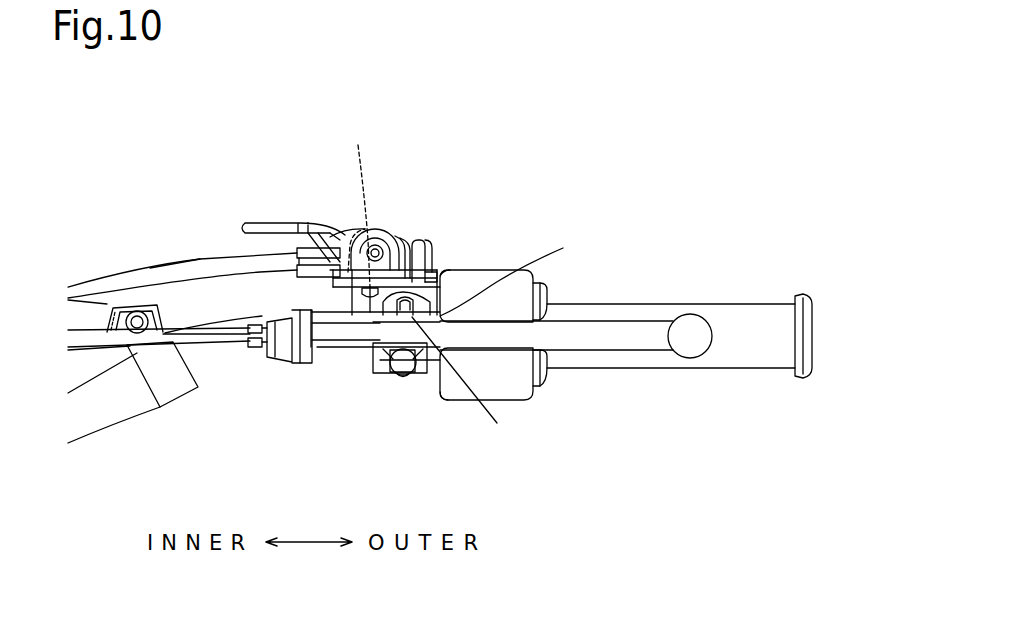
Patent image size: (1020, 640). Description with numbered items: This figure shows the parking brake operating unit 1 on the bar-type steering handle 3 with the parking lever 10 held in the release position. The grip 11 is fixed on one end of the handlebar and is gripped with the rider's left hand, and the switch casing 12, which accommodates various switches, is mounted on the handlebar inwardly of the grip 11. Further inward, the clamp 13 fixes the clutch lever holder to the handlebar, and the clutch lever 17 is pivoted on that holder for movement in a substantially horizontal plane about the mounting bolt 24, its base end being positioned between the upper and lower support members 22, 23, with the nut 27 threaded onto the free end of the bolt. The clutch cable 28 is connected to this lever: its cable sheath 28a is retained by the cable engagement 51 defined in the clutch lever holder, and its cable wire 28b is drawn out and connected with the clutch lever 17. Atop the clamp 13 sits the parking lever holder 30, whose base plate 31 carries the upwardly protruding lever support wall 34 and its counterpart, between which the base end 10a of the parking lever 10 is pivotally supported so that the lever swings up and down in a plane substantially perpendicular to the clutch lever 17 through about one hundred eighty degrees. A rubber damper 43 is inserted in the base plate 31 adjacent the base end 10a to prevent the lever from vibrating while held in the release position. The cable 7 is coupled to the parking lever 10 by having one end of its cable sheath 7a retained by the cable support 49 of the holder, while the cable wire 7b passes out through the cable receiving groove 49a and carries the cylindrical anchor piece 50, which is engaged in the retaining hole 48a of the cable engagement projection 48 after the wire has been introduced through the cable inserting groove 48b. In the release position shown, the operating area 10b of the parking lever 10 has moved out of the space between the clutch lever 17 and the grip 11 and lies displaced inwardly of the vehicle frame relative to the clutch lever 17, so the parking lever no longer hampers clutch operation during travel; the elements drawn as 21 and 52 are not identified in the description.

The parking brake operating unit 1 is at (340, 237).
The bar-type steering handle 3 is at (123, 408).
The cable 7 is at (142, 254).
The cable sheath 7a is at (188, 260).
The cable wire 7b is at (336, 210).
The parking lever 10 is at (311, 211).
The base end of the parking lever 10a is at (525, 272).
The operating area of the parking lever 10b is at (247, 223).
The grip 11 is at (733, 320).
The switch casing 12 is at (507, 268).
The clamp 13 is at (440, 392).
The clutch lever 17 is at (643, 318).
The bracket 21 is at (408, 374).
The upper support member 22 is at (468, 381).
The lower support member 23 is at (392, 400).
The mounting bolt 24 is at (412, 247).
The nut 27 is at (407, 374).
The clutch cable 28 is at (210, 352).
The cable sheath of the clutch cable 28a is at (228, 337).
The cable wire of the clutch cable 28b is at (313, 360).
The parking lever holder 30 is at (437, 232).
The base plate 31 is at (458, 270).
The lever support wall 34 is at (432, 250).
The rubber damper 43 is at (357, 213).
The cable engagement projection 48 is at (353, 233).
The retaining hole 48a is at (388, 240).
The cable inserting groove 48b is at (375, 245).
The cable support 49 is at (300, 283).
The cable receiving groove 49a is at (300, 245).
The cylindrical anchor piece 50 is at (378, 358).
The cable engagement 51 is at (265, 345).
The cable adjuster 52 is at (343, 340).